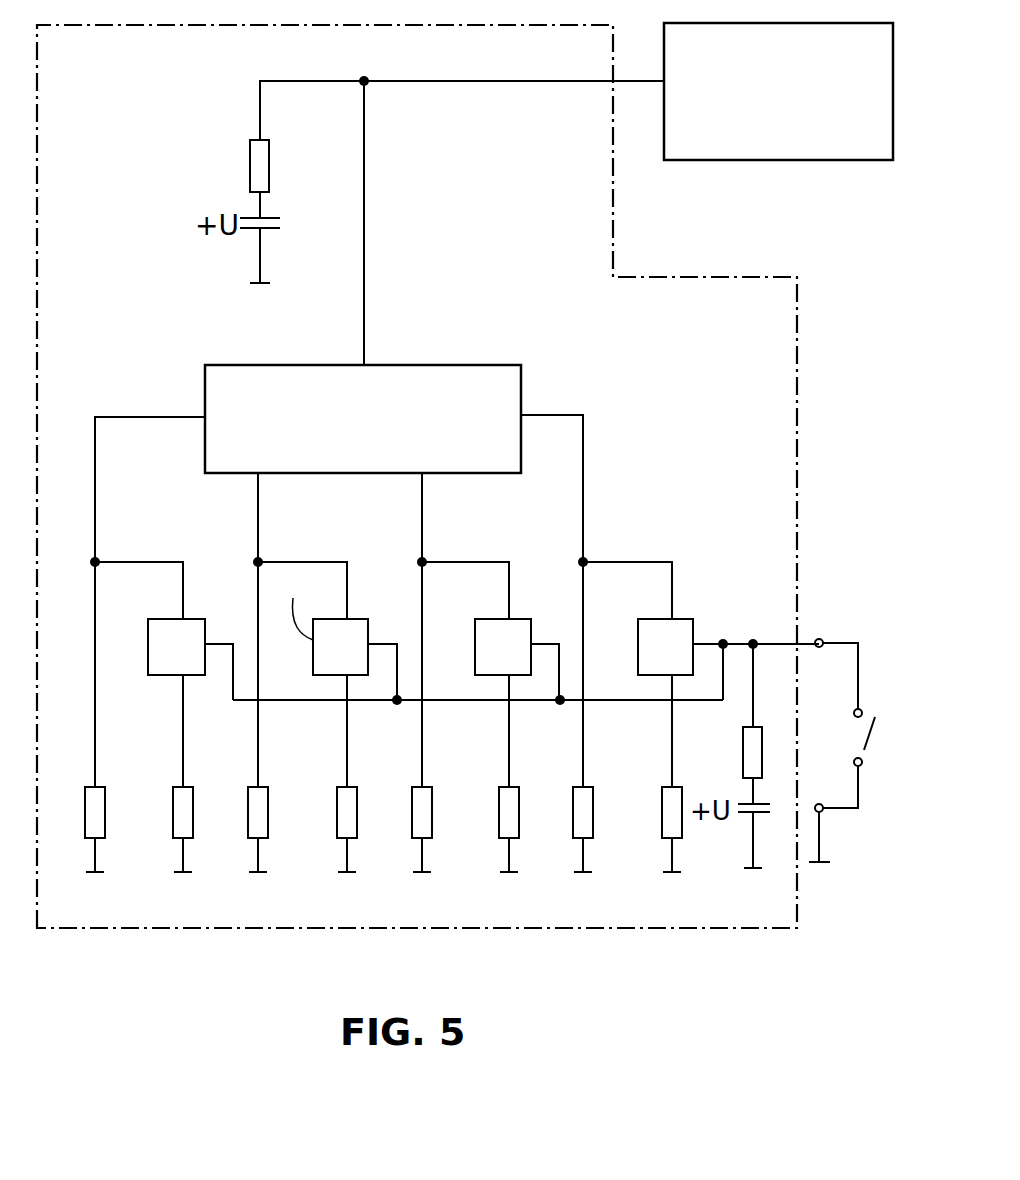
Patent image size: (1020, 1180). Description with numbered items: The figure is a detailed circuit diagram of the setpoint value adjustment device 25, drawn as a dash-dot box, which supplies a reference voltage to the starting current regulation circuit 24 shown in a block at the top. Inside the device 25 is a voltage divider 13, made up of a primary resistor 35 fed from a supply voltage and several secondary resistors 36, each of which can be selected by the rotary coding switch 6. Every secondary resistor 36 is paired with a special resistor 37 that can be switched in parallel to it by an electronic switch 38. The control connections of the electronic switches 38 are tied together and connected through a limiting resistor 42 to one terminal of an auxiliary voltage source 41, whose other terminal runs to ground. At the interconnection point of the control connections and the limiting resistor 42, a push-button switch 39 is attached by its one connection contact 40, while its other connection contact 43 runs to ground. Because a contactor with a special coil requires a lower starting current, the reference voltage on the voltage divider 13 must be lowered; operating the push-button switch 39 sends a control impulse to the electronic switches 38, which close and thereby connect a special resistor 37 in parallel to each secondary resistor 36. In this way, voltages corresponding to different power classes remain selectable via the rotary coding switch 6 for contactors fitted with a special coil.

The rotary coding switch 6 is at (463, 365).
The voltage divider 13 is at (347, 334).
The starting current regulation circuit 24 is at (858, 160).
The setpoint value adjustment device 25 is at (165, 930).
The primary resistor 35 is at (250, 168).
The secondary resistor 36 is at (85, 805).
The special resistor 37 is at (173, 800).
The electronic switch 38 is at (184, 610).
The push-button switch 39 is at (864, 745).
The connection contact 40 is at (819, 639).
The auxiliary voltage source 41 is at (746, 815).
The limiting resistor 42 is at (743, 767).
The connection contact 43 is at (823, 812).